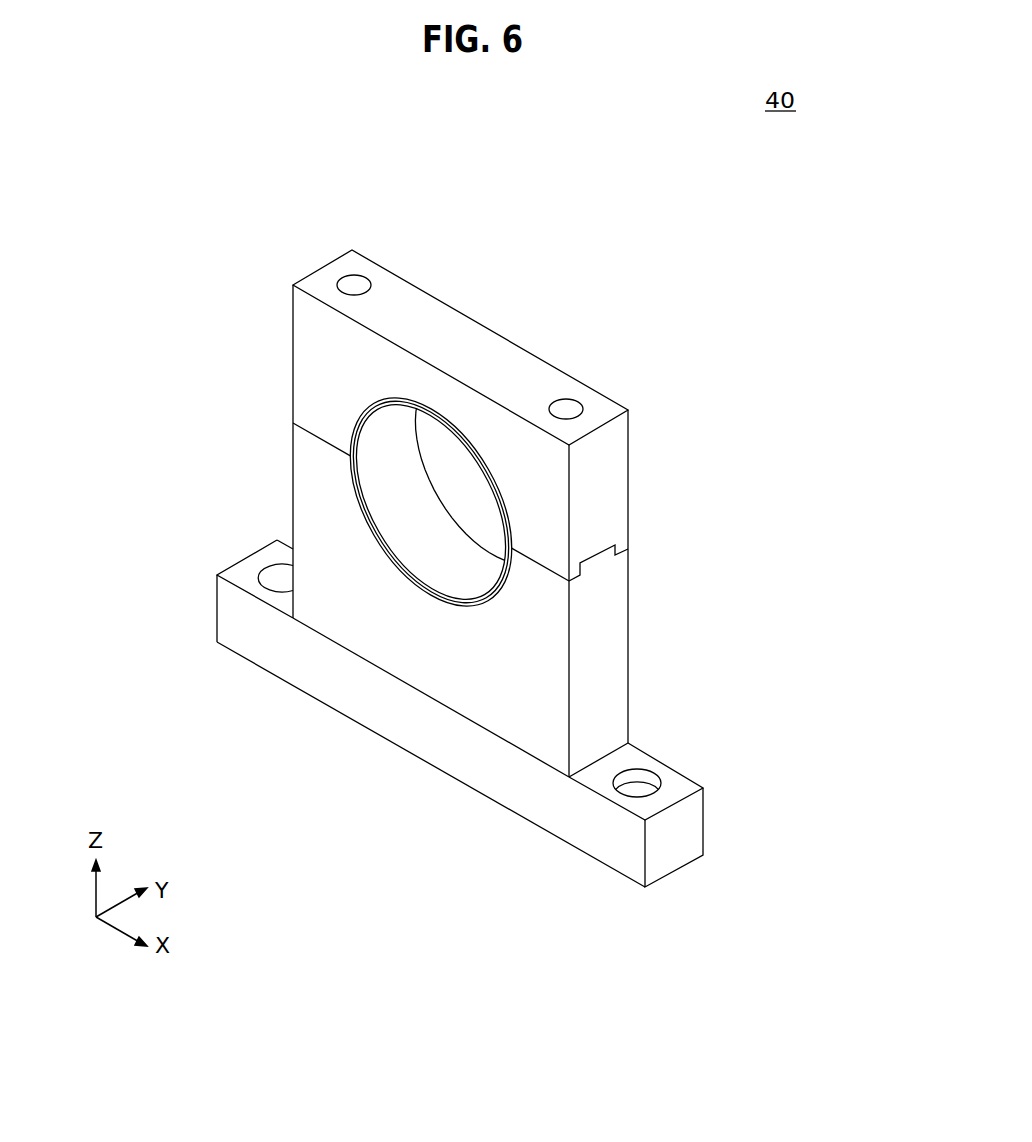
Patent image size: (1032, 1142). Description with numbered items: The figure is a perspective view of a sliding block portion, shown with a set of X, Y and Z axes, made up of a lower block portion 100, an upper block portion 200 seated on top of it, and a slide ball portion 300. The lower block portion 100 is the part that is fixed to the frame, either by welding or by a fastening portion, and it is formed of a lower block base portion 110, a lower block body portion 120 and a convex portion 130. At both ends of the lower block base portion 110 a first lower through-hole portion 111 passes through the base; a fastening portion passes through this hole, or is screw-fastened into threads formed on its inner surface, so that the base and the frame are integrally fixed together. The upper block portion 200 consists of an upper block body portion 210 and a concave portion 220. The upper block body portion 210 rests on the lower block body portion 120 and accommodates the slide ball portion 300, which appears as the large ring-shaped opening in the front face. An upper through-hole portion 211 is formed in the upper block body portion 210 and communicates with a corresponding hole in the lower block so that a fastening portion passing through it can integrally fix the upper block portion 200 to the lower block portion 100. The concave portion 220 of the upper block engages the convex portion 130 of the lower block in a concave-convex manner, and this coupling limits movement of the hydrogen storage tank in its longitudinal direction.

The lower block portion 100 is at (537, 675).
The lower block base portion 110 is at (693, 818).
The first lower through-hole portion 111 is at (627, 783).
The lower block body portion 120 is at (610, 662).
The convex portion 130 is at (597, 560).
The upper block portion 200 is at (575, 415).
The upper block body portion 210 is at (620, 458).
The upper through-hole portion 211 is at (577, 398).
The concave portion 220 is at (588, 557).
The slide ball portion 300 is at (452, 568).